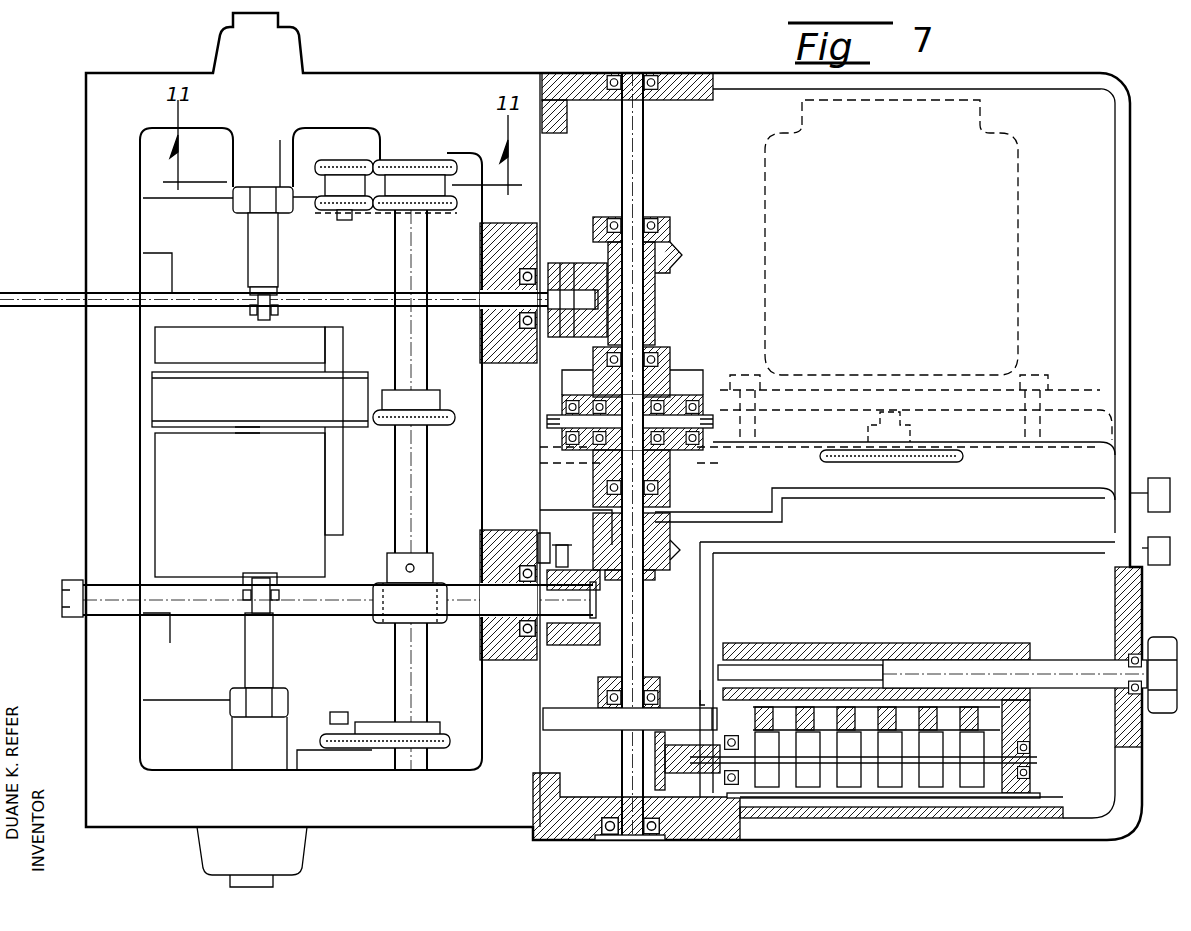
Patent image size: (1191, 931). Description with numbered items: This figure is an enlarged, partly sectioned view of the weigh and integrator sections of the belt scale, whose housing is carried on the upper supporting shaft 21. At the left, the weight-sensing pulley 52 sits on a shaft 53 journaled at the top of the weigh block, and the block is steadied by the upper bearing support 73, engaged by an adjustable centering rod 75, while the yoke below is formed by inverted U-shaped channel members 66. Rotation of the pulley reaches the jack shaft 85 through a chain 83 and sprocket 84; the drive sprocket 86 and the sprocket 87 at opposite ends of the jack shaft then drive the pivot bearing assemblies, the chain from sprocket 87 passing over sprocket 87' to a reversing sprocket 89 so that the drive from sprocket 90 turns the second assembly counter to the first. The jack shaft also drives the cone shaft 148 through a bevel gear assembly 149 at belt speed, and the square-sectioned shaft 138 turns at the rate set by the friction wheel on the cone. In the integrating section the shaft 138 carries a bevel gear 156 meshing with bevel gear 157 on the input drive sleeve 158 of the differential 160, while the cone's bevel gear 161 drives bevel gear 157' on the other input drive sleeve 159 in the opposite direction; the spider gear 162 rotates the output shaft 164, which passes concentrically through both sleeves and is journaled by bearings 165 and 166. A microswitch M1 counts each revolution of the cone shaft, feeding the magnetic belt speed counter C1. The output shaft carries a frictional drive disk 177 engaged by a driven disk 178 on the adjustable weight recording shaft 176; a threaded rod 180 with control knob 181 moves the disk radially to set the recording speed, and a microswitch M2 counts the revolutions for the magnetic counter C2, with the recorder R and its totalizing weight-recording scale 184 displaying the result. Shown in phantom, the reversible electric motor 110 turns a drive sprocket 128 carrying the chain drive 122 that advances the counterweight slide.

The upper supporting shaft 21 is at (273, 883).
The channel member 66 is at (152, 200).
The adjustable centering rod 75 is at (248, 255).
The upper bearing support 73 is at (258, 300).
The square-sectioned shaft 138 is at (312, 292).
The weight-sensing pulley 52 is at (258, 408).
The shaft 53 is at (243, 433).
The jack shaft 85 is at (428, 327).
The reversing sprocket 89 is at (326, 160).
The sprocket 90 is at (440, 160).
The sprocket 87 is at (392, 220).
The sprocket 87' is at (335, 220).
The sprocket 84 is at (438, 392).
The chain 83 is at (440, 426).
The drive sprocket 86 is at (430, 736).
The cone shaft 148 is at (340, 583).
The bevel gear assembly 149 is at (385, 623).
The bevel gear 156 is at (590, 262).
The bevel gear 161 is at (590, 650).
The microswitch M1 is at (557, 548).
The bearing 165 is at (610, 75).
The bevel gear 157 is at (666, 245).
The input drive sleeve 158 is at (656, 308).
The differential 160 is at (678, 386).
The spider gear 162 is at (670, 460).
The input drive sleeve 159 is at (668, 532).
The bevel gear 157' is at (681, 572).
The output shaft 164 is at (645, 615).
The frictional drive disk 177 is at (562, 730).
The microswitch M2 is at (700, 700).
The bearing 166 is at (612, 835).
The chain drive 122 is at (742, 465).
The drive sprocket 128 is at (936, 462).
The reversible electric motor 110 is at (1022, 216).
The magnetic belt speed counter C1 is at (1150, 478).
The magnetic counter C2 is at (1152, 565).
The adjustable weight recording shaft 176 is at (1038, 762).
The driven disk 178 is at (665, 775).
The threaded rod 180 is at (1048, 660).
The control knob 181 is at (1155, 713).
The recorder R is at (983, 812).
The totalizing weight-recording scale 184 is at (915, 798).